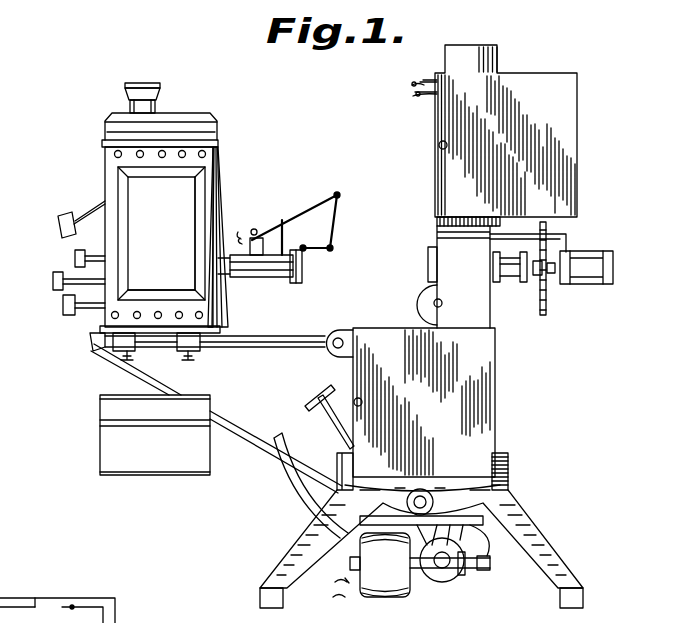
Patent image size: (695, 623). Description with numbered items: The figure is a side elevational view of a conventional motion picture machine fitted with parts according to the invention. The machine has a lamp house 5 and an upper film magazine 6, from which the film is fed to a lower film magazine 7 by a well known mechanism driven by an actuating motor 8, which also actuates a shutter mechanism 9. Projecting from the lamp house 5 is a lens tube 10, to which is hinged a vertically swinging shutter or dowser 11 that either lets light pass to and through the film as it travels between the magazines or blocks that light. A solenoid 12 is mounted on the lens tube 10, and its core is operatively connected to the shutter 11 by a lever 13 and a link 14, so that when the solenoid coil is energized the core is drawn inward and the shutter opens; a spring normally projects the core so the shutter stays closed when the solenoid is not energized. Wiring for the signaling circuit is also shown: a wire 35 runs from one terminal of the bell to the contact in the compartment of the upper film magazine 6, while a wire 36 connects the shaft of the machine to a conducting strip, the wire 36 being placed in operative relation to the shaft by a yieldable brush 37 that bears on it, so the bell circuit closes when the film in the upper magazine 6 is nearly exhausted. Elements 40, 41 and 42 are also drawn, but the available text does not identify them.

The lamp house 5 is at (212, 152).
The upper film magazine 6 is at (577, 112).
The lower film magazine 7 is at (495, 355).
The actuating motor 8 is at (388, 595).
The shutter mechanism 9 is at (546, 300).
The lens tube 10 is at (255, 277).
The shutter or dowser 11 is at (318, 252).
The solenoid 12 is at (262, 234).
The lever 13 is at (305, 206).
The link 14 is at (338, 222).
The wire 35 is at (412, 84).
The wire 36 is at (430, 80).
The yieldable brush 37 is at (417, 96).
The switch box 40 is at (82, 598).
The conductor 41 is at (38, 600).
The switch 42 is at (72, 608).